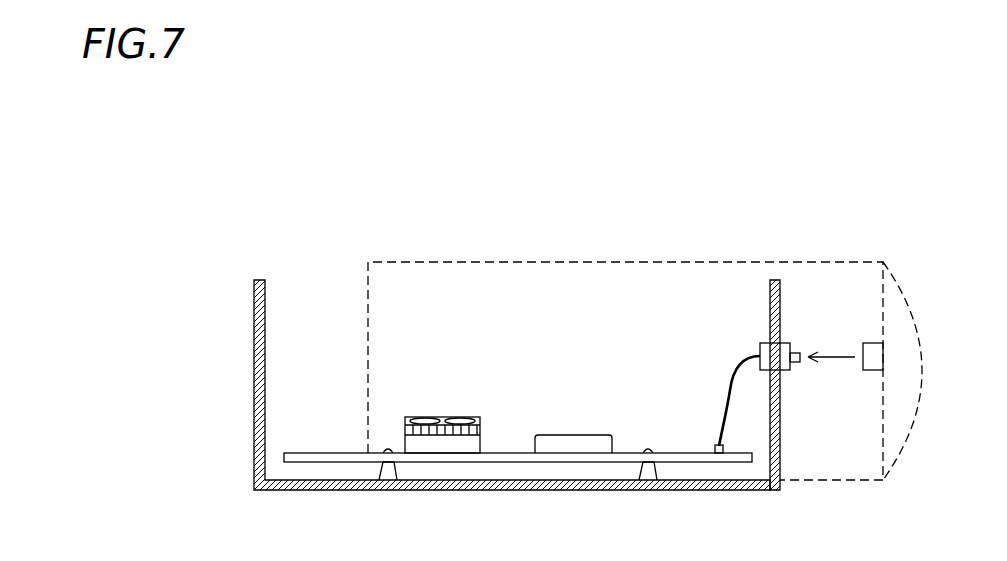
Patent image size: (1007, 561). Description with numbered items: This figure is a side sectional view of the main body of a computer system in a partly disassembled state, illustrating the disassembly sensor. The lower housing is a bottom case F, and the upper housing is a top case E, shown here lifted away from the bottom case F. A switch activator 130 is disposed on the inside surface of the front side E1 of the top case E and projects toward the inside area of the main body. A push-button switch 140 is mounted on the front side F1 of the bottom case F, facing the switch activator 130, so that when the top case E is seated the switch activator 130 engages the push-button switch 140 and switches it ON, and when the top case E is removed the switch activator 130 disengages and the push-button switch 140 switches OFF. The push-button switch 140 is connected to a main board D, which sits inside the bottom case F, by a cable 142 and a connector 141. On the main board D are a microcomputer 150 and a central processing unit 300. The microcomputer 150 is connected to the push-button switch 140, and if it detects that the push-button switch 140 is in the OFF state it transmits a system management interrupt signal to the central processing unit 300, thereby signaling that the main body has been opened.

The push-button switch 140 is at (731, 364).
The connector 141 is at (716, 445).
The cable 142 is at (730, 387).
The microcomputer 150 is at (585, 435).
The central processing unit 300 is at (480, 438).
The switch activator 130 is at (863, 342).
The top case E is at (628, 259).
The front side of top case E1 is at (883, 306).
The bottom case F is at (513, 407).
The front side of bottom case F1 is at (778, 477).
The main board D is at (507, 462).